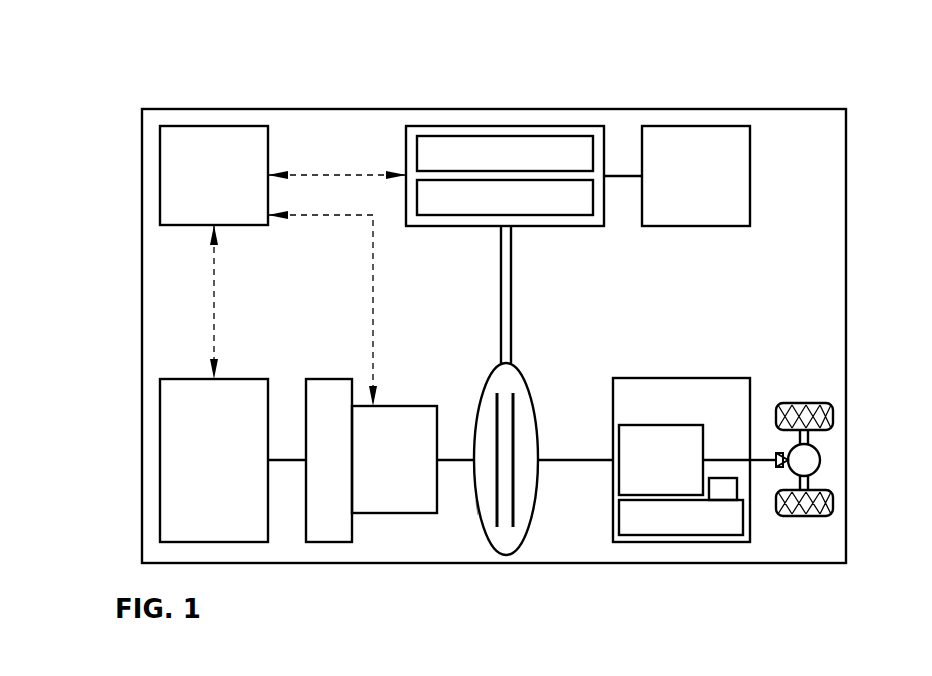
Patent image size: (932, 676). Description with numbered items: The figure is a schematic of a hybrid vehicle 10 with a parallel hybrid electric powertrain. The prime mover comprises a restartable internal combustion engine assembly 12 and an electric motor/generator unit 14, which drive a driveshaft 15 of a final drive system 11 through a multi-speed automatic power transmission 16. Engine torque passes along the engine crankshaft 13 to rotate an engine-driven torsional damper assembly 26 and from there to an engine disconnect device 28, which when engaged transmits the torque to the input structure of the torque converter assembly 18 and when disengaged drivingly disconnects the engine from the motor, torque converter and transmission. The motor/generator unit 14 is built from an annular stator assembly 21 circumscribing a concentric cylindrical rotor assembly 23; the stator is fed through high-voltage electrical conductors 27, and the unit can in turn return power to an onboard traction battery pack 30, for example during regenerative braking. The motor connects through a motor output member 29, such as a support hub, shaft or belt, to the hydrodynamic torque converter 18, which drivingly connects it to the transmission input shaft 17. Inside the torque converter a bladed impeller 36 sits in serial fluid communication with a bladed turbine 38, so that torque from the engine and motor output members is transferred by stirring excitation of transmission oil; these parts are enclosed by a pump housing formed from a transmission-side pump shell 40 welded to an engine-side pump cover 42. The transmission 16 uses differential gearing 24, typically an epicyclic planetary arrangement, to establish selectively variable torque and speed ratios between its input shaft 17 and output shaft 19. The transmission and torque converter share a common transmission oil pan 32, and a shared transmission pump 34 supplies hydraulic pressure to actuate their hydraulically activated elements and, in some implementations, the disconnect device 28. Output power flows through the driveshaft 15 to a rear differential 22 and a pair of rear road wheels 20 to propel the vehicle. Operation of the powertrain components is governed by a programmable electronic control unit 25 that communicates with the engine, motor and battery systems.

The hybrid vehicle 10 is at (128, 90).
The final drive system 11 is at (826, 290).
The internal combustion engine assembly 12 is at (172, 379).
The engine crankshaft 13 is at (287, 460).
The electric motor/generator unit 14 is at (420, 126).
The driveshaft 15 is at (765, 458).
The multi-speed automatic power transmission 16 is at (623, 378).
The transmission input shaft 17 is at (571, 458).
The torque converter assembly 18 is at (532, 512).
The transmission output shaft 19 is at (454, 458).
The rear road wheels 20 is at (801, 403).
The annular stator assembly 21 is at (417, 145).
The rear differential 22 is at (822, 457).
The cylindrical rotor assembly 23 is at (417, 189).
The differential gearing 24 is at (670, 425).
The electronic control unit 25 is at (172, 126).
The torsional damper assembly 26 is at (345, 379).
The electrical conductors/cables 27 is at (618, 176).
The engine disconnect device 28 is at (410, 406).
The motor output member 29 is at (501, 262).
The traction battery pack 30 is at (672, 126).
The transmission oil pan 32 is at (658, 520).
The transmission pump 34 is at (722, 490).
The bladed impeller 36 is at (497, 521).
The bladed turbine 38 is at (513, 521).
The transmission-side pump shell 40 is at (536, 490).
The engine-side pump cover 42 is at (478, 513).